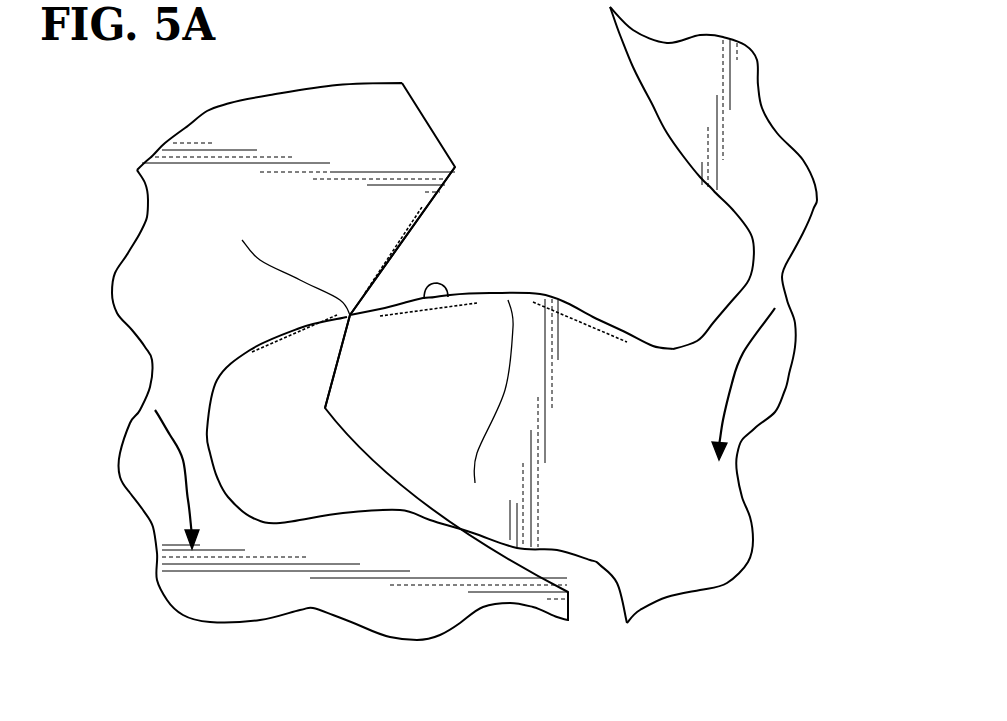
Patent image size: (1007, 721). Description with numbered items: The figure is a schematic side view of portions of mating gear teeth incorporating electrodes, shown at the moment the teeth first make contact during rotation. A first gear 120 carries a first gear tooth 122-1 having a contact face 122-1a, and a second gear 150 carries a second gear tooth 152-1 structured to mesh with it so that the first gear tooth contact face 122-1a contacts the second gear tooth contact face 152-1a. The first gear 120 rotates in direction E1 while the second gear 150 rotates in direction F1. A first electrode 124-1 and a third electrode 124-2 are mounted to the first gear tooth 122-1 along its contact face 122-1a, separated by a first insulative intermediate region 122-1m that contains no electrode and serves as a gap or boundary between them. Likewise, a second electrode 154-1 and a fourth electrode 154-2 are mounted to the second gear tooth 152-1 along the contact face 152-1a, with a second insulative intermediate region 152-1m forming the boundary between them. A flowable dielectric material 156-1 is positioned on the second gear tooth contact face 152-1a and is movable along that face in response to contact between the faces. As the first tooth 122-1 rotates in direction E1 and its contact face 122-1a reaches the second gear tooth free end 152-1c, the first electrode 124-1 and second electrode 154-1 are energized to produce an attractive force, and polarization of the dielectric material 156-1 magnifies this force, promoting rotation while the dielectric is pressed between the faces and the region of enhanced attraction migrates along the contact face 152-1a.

The first gear 120 is at (202, 460).
The first gear tooth 122-1 is at (250, 137).
The first gear tooth contact face 122-1a is at (443, 200).
The first insulative intermediate region 122-1m is at (273, 266).
The first electrode 124-1 is at (390, 255).
The third electrode 124-2 is at (290, 333).
The second gear 150 is at (720, 530).
The second gear tooth 152-1 is at (702, 380).
The second gear tooth contact face 152-1a is at (640, 337).
The second gear tooth free end 152-1c is at (337, 360).
The second insulative intermediate region 152-1m is at (473, 407).
The second electrode 154-1 is at (427, 310).
The fourth electrode 154-2 is at (583, 327).
The flowable dielectric material 156-1 is at (445, 285).
The rotation direction of first gear E1 is at (186, 476).
The rotation direction of second gear F1 is at (732, 383).